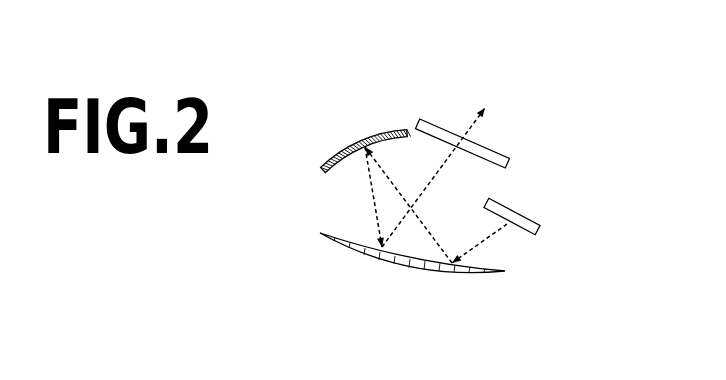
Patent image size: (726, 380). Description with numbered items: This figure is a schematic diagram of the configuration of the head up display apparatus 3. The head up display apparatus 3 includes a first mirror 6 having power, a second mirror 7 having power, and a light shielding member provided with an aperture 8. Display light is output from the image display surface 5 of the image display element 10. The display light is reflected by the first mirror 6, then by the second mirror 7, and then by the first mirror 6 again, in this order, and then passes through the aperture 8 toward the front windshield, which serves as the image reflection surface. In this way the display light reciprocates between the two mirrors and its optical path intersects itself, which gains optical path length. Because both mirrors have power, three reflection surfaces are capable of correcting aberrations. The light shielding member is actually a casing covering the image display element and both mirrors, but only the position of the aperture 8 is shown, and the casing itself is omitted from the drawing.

The head up display apparatus 3 is at (531, 81).
The image display surface 5 is at (525, 232).
The first mirror 6 is at (360, 253).
The second mirror 7 is at (342, 150).
The aperture 8 is at (433, 124).
The image display element 10 is at (531, 220).